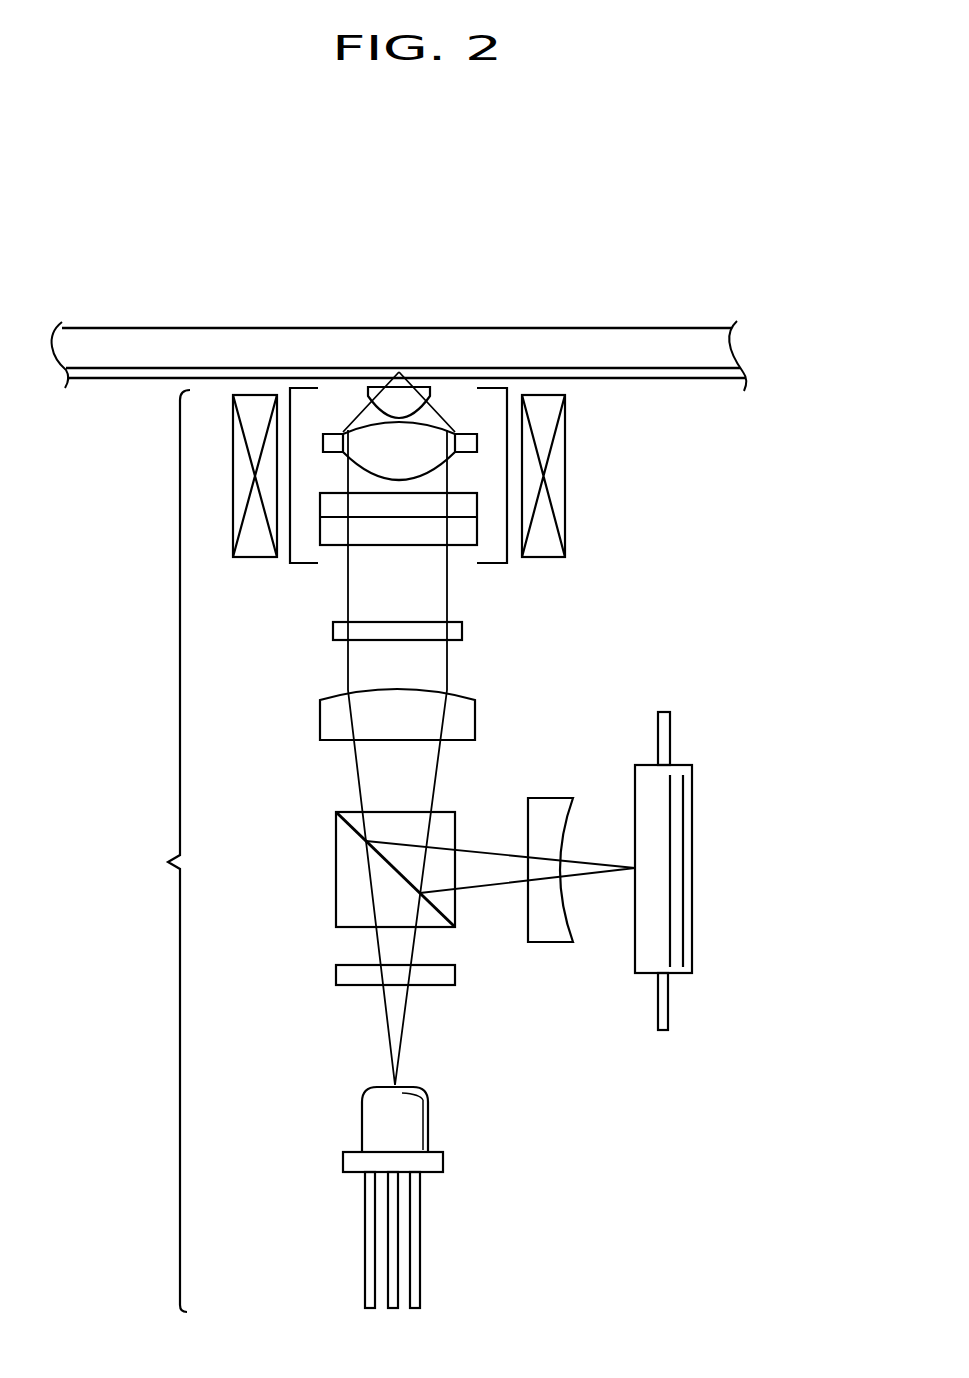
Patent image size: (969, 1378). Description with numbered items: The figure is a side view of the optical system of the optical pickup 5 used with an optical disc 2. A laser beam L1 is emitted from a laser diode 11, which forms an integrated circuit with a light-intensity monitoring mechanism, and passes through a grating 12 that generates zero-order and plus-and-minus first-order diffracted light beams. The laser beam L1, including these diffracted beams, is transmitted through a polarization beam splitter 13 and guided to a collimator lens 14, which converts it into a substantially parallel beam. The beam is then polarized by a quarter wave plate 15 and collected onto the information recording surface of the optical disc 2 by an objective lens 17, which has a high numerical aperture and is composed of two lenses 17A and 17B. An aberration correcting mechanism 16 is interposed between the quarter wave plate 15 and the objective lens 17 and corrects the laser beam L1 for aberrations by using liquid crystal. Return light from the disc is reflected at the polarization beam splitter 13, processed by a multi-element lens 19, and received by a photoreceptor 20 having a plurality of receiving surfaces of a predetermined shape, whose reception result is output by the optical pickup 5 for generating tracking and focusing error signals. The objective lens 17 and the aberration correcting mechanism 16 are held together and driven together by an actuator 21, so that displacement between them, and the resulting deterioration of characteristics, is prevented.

The optical disc 2 is at (652, 328).
The optical pickup 5 is at (167, 851).
The laser diode 11 is at (375, 1125).
The grating 12 is at (336, 966).
The polarization beam splitter 13 is at (336, 880).
The collimator lens 14 is at (320, 722).
The quarter wave plate 15 is at (333, 631).
The aberration correcting mechanism 16 is at (338, 547).
The objective lens 17 is at (375, 247).
The lens 17A is at (367, 405).
The lens 17B is at (326, 441).
The multi-element lens 19 is at (548, 798).
The photoreceptor 20 is at (695, 797).
The actuator 21 is at (565, 435).
The laser beam L1 is at (400, 1020).